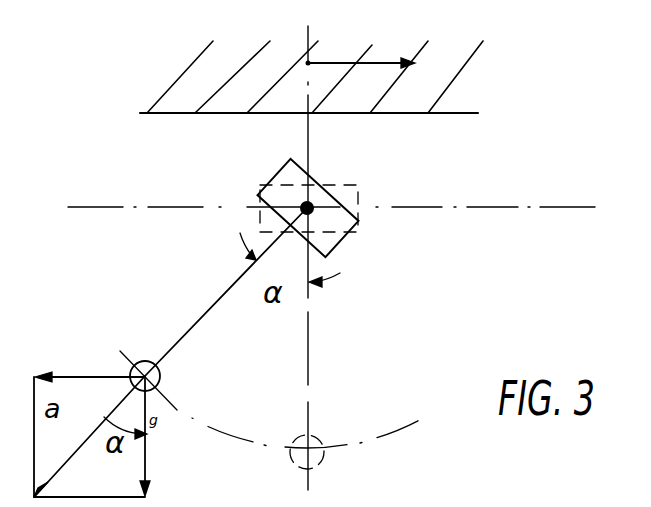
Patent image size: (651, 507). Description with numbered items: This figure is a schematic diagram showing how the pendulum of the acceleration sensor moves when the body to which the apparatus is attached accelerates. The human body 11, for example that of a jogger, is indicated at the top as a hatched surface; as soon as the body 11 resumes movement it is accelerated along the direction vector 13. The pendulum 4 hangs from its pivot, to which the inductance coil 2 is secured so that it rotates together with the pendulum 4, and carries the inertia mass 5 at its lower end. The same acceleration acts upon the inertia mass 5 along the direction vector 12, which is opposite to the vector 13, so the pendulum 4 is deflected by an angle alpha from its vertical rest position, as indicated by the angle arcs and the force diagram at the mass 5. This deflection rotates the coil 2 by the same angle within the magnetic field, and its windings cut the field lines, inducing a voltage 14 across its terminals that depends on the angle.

The inductance coil 2 is at (334, 242).
The pendulum 4 is at (207, 312).
The inertia mass 5 is at (158, 378).
The human body 11 is at (227, 52).
The direction vector 12 is at (72, 375).
The direction vector 13 is at (357, 62).
The induced voltage 14 is at (146, 463).